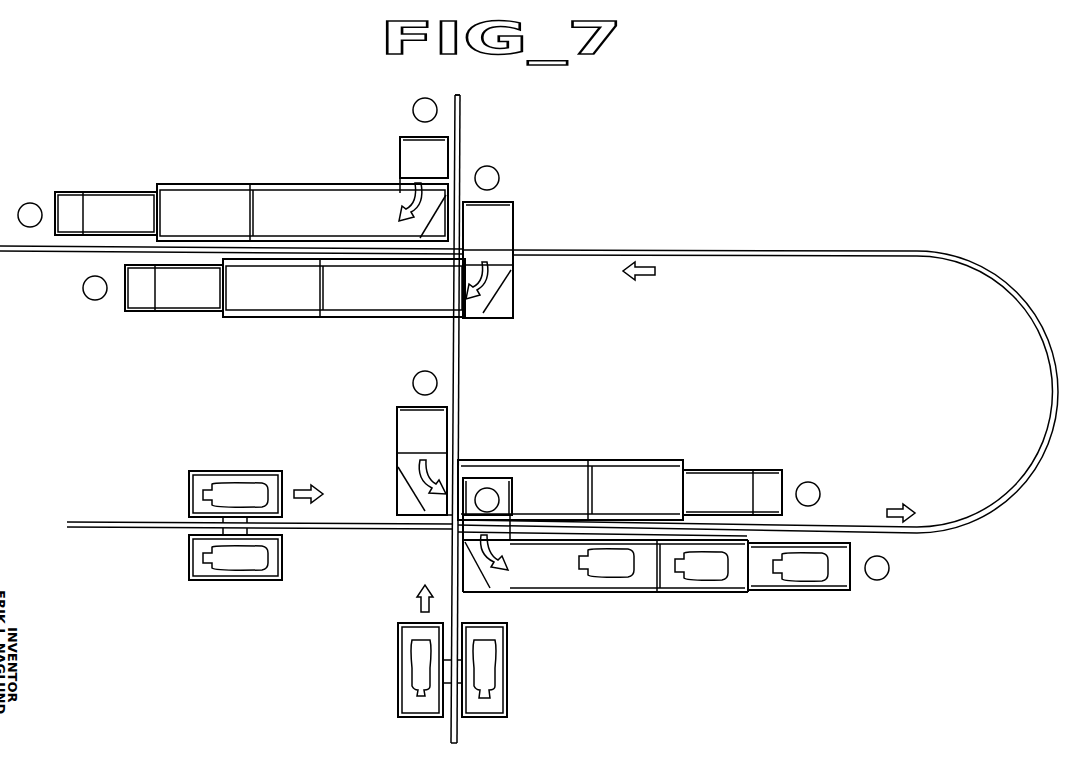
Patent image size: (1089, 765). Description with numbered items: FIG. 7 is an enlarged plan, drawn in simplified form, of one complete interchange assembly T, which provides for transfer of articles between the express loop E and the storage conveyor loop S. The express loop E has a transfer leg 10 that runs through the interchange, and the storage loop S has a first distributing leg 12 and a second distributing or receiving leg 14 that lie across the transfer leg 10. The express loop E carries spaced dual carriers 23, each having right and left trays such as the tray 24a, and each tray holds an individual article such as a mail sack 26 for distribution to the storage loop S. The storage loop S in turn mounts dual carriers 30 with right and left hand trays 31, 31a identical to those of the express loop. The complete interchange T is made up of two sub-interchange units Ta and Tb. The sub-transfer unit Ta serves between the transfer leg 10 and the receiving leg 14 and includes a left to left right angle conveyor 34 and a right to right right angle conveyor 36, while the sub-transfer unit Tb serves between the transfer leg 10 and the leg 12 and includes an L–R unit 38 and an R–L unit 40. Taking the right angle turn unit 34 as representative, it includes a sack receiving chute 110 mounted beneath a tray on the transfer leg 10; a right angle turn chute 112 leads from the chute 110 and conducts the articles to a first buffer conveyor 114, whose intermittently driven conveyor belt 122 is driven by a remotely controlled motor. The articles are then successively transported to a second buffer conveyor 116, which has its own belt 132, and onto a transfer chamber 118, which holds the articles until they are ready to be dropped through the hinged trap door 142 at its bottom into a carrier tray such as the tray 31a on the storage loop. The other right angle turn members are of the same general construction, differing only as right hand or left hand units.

The transfer leg 10 is at (452, 556).
The first distributing leg 12 is at (707, 251).
The second distributing leg 14 is at (328, 523).
The dual carrier 23 is at (392, 646).
The tray 24a is at (405, 668).
The mail sack 26 is at (214, 498).
The dual carrier 30 is at (174, 464).
The tray 31 is at (264, 572).
The tray 31a is at (270, 478).
The left to left right angle conveyor 34 is at (381, 467).
The right to right right angle conveyor 36 is at (548, 583).
The L–R unit 38 is at (400, 147).
The R–L unit 40 is at (513, 224).
The sack receiving chute 110 is at (397, 420).
The right angle turn chute 112 is at (398, 490).
The first buffer conveyor 114 is at (560, 505).
The second buffer conveyor 116 is at (652, 505).
The transfer chamber 118 is at (735, 505).
The conveyor belt 122 is at (540, 470).
The belt 132 is at (622, 470).
The hinged trap door 142 is at (735, 474).
The complete interchange assembly T is at (214, 110).
The sub-interchange unit Ta is at (482, 438).
The sub-interchange unit Tb is at (476, 337).
The storage conveyor loop S is at (1046, 403).
The express loop E is at (444, 735).